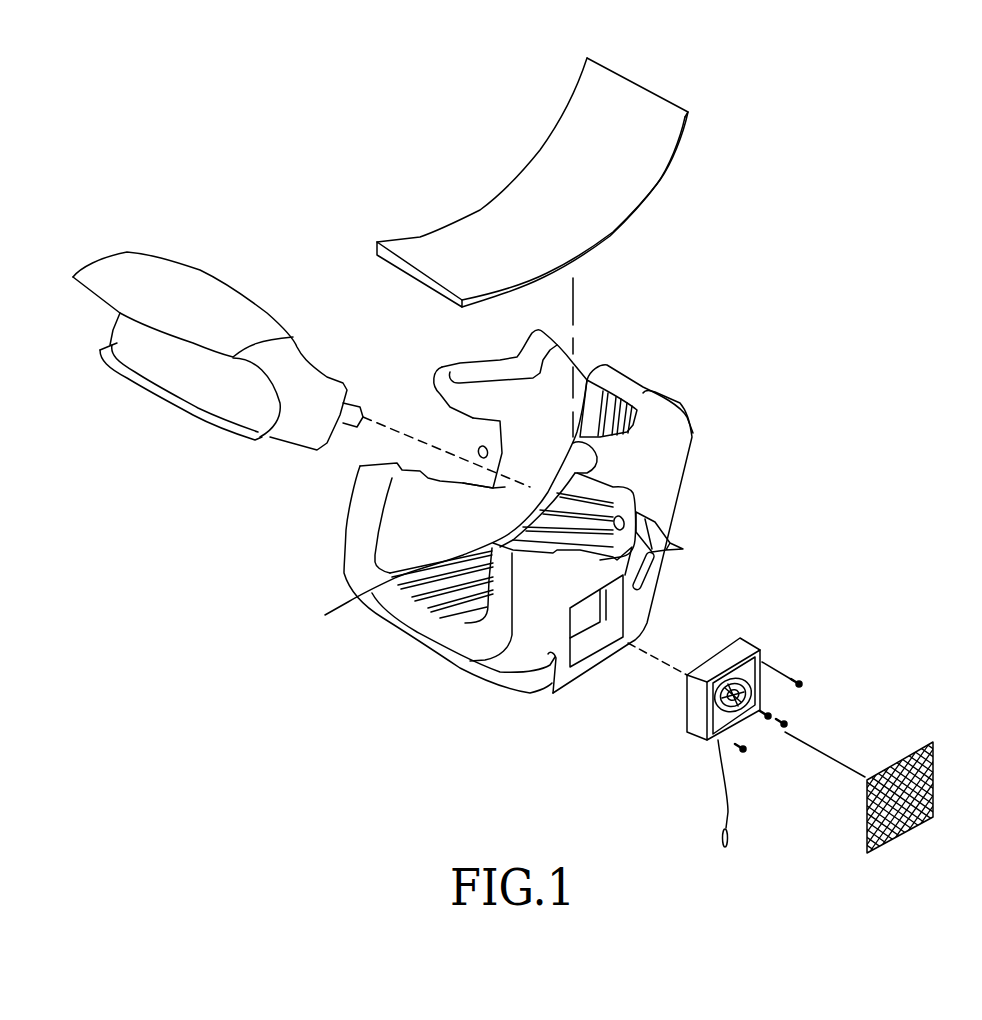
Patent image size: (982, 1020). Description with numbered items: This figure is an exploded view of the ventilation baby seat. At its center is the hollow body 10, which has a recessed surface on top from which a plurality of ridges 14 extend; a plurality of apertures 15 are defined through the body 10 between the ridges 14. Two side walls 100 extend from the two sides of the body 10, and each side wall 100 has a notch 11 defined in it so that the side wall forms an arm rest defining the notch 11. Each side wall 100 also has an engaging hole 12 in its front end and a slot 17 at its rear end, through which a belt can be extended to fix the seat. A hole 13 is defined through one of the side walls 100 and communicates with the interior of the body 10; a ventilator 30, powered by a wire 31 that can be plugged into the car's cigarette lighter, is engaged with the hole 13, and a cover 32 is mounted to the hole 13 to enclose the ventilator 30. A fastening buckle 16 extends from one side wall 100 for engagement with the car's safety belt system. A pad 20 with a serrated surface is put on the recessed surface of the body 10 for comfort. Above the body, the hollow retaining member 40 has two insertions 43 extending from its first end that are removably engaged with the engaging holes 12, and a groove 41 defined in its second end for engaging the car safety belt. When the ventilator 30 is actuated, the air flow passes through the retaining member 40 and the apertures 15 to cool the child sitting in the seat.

The hollow body 10 is at (503, 540).
The side wall 100 is at (345, 524).
The notch 11 is at (450, 440).
The engaging hole 12 is at (637, 494).
The hole 13 is at (592, 647).
The ridge 14 is at (400, 640).
The aperture 15 is at (348, 602).
The fastening buckle 16 is at (667, 527).
The slot 17 is at (647, 578).
The pad 20 is at (647, 232).
The ventilator 30 is at (746, 731).
The wire 31 is at (726, 802).
The cover 32 is at (934, 741).
The retaining member 40 is at (301, 327).
The groove 41 is at (170, 377).
The insertion 43 is at (352, 413).